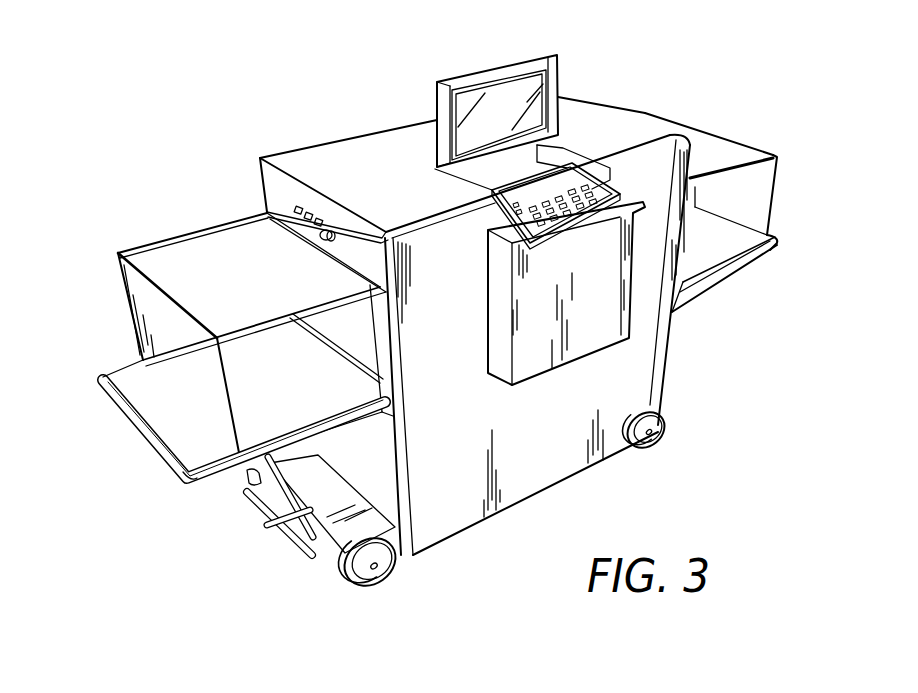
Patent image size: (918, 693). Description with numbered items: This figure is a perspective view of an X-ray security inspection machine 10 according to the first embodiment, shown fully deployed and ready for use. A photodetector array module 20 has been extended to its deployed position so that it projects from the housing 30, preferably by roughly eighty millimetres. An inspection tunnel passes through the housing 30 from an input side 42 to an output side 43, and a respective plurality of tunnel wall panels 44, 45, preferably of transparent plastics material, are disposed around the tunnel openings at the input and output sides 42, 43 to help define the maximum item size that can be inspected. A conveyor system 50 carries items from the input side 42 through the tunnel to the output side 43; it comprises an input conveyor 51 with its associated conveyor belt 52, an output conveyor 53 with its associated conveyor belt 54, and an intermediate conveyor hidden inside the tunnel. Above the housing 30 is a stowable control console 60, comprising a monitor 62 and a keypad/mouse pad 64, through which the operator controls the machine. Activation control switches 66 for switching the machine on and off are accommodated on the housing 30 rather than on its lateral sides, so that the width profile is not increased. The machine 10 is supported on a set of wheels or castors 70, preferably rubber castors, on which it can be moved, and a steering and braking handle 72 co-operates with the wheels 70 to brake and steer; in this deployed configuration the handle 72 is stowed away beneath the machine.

The X-ray security inspection machine 10 is at (168, 165).
The photodetector array module 20 is at (603, 334).
The housing 30 is at (448, 520).
The input side 42 is at (225, 326).
The output side 43 is at (742, 185).
The tunnel wall panels 44 is at (195, 232).
The tunnel wall panels 45 is at (733, 143).
The conveyor system 50 is at (237, 457).
The input conveyor 51 is at (200, 485).
The conveyor belt 52 is at (168, 442).
The output conveyor 53 is at (733, 268).
The conveyor belt 54 is at (767, 235).
The control console 60 is at (488, 109).
The monitor 62 is at (563, 80).
The keypad/mouse pad 64 is at (564, 223).
The activation control switches 66 is at (325, 213).
The wheels or castors 70 is at (390, 557).
The steering and braking handle 72 is at (290, 542).